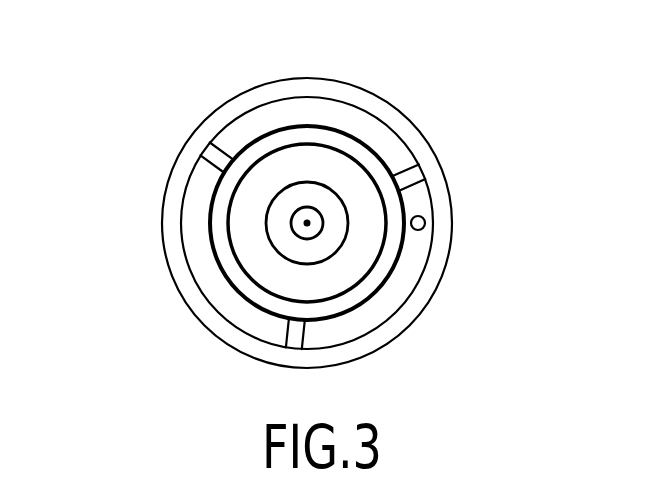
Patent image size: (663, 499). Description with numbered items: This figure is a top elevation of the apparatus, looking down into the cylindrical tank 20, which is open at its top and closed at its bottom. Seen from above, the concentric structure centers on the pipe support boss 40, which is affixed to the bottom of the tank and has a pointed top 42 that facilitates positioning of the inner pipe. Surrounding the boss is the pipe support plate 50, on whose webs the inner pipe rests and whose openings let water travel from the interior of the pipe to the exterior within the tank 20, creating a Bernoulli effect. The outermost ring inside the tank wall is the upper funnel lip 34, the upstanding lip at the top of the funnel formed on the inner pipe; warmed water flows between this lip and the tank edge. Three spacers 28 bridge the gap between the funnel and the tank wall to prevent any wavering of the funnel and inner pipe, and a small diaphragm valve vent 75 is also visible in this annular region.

The tank 20 is at (242, 100).
The upper funnel lip 34 is at (310, 132).
The pipe support plate 50 is at (327, 195).
The pipe support boss 40 is at (332, 243).
The pointed top of pipe support boss 42 is at (307, 225).
The spacers 28 is at (213, 157).
The diaphragm valve vent 75 is at (416, 226).